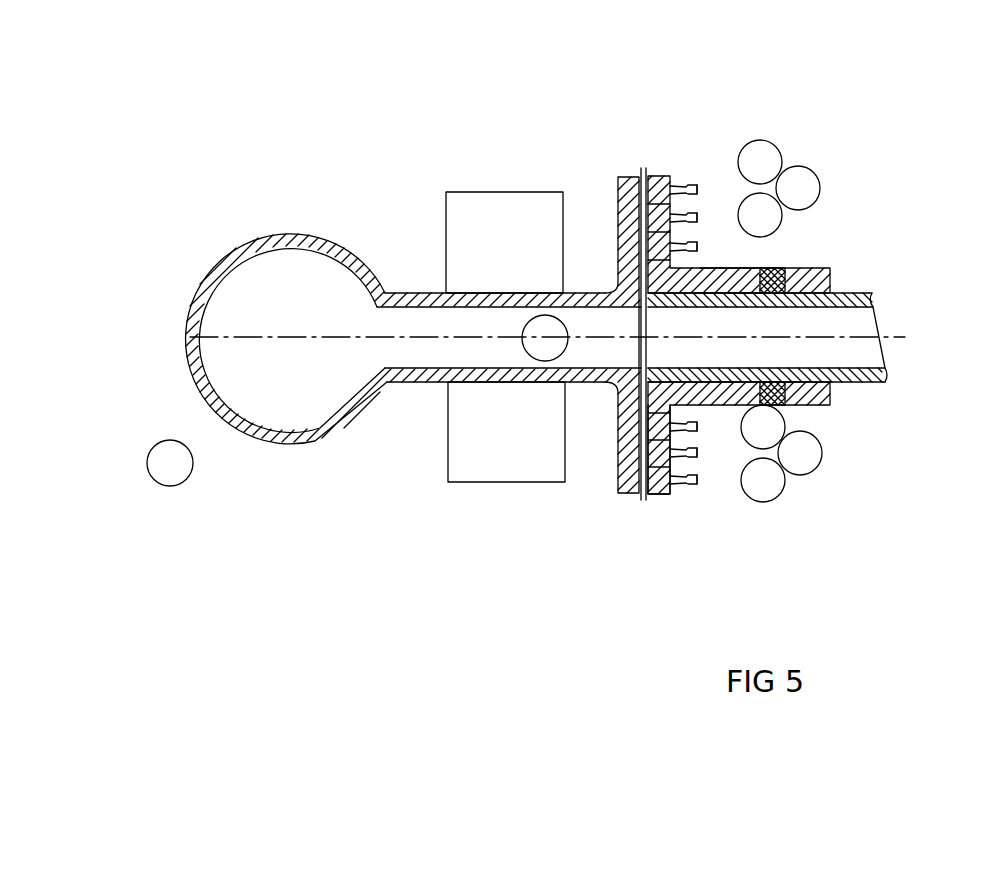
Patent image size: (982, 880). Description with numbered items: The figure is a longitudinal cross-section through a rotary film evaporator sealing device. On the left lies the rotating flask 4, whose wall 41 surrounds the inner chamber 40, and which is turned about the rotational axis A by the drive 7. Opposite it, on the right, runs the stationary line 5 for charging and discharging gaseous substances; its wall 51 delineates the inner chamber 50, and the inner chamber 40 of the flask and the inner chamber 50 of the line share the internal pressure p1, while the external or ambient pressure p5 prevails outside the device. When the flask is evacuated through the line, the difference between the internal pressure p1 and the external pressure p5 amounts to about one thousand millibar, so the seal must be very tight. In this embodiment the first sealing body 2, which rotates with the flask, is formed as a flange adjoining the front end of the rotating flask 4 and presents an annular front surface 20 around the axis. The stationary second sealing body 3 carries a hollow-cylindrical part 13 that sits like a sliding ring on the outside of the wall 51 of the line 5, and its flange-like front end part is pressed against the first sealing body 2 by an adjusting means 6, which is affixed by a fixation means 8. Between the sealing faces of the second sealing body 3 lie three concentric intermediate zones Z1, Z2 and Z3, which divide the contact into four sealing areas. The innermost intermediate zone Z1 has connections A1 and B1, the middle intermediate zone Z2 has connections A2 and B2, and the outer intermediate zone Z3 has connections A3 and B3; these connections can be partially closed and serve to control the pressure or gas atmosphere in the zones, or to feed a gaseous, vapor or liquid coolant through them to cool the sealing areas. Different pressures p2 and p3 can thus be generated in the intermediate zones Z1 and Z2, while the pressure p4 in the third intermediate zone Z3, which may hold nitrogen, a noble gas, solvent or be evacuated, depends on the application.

The inner chamber of the rotating flask 40 is at (272, 278).
The rotating flask 4 is at (360, 262).
The wall of the rotating flask 41 is at (507, 385).
The rotational axis A is at (350, 338).
The drive 7 is at (524, 208).
The second sealing body 3 is at (651, 175).
The first sealing body 2 is at (623, 495).
The front surface of the first sealing body 20 is at (650, 497).
The fixation means 8 is at (832, 276).
The adjusting means 6 is at (778, 268).
The wall of the line 51 is at (707, 293).
The hollow-cylindrical part 13 is at (743, 278).
The line 5 is at (852, 378).
The inner chamber of the line 50 is at (862, 318).
The first intermediate zone Z1 is at (686, 188).
The second intermediate zone Z2 is at (678, 194).
The third intermediate zone Z3 is at (660, 194).
The connection A1 is at (698, 268).
The connection A2 is at (704, 196).
The connection A3 is at (700, 218).
The connection B1 is at (697, 432).
The connection B2 is at (690, 457).
The connection B3 is at (677, 484).
The internal pressure p1 is at (545, 338).
The pressure in intermediate zone Z1 p2 is at (708, 241).
The pressure in intermediate zone Z2 p3 is at (708, 213).
The pressure in intermediate zone Z3 p4 is at (708, 183).
The external pressure p5 is at (170, 463).